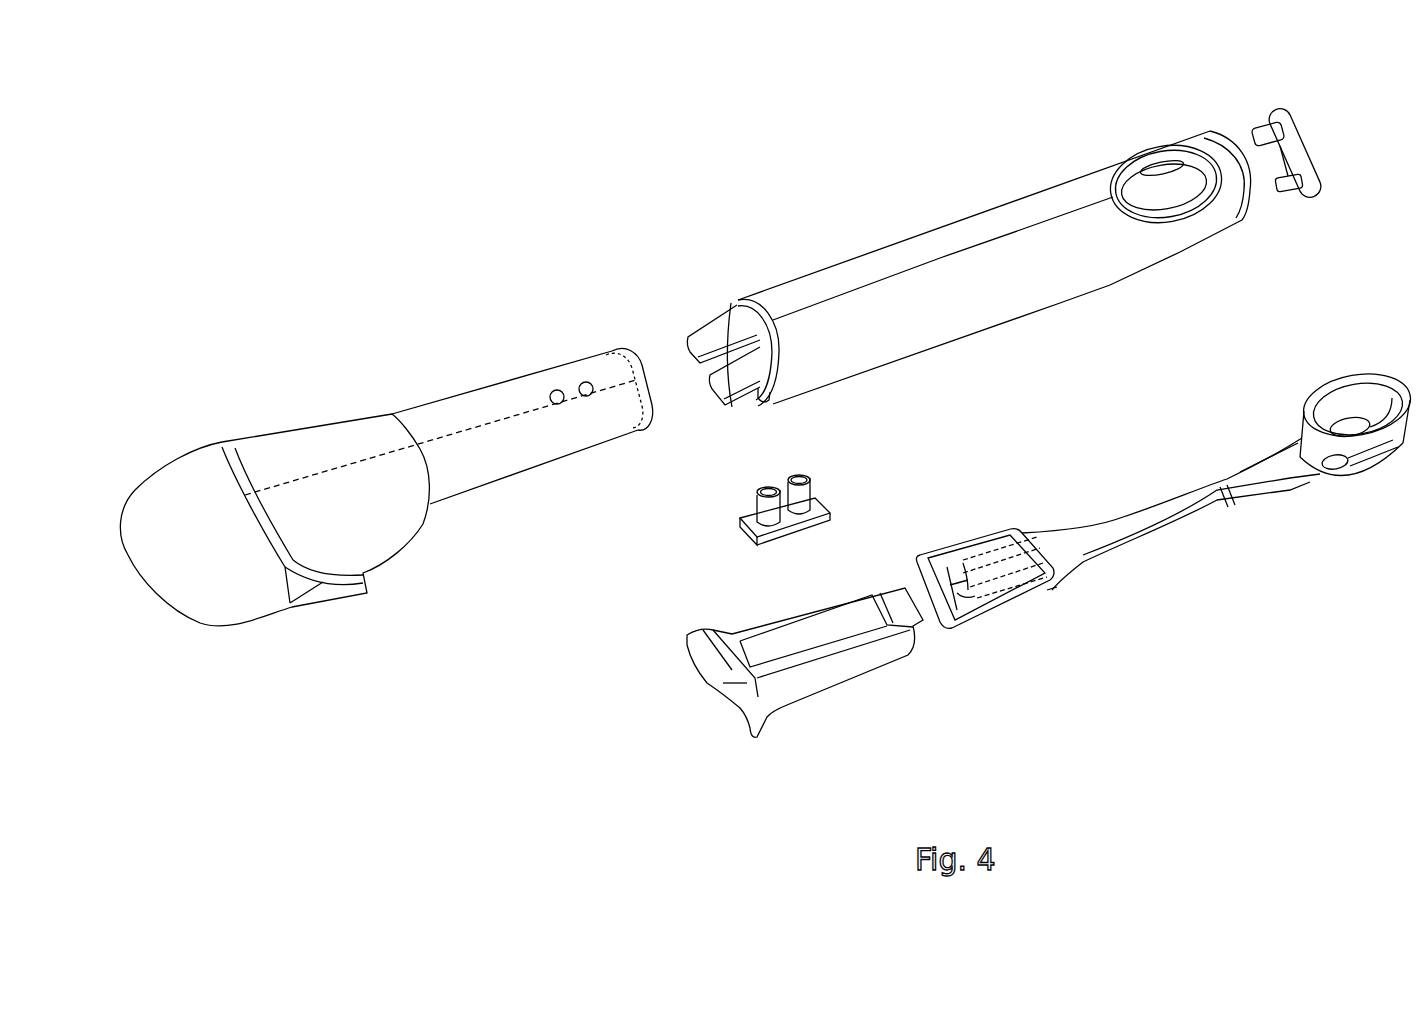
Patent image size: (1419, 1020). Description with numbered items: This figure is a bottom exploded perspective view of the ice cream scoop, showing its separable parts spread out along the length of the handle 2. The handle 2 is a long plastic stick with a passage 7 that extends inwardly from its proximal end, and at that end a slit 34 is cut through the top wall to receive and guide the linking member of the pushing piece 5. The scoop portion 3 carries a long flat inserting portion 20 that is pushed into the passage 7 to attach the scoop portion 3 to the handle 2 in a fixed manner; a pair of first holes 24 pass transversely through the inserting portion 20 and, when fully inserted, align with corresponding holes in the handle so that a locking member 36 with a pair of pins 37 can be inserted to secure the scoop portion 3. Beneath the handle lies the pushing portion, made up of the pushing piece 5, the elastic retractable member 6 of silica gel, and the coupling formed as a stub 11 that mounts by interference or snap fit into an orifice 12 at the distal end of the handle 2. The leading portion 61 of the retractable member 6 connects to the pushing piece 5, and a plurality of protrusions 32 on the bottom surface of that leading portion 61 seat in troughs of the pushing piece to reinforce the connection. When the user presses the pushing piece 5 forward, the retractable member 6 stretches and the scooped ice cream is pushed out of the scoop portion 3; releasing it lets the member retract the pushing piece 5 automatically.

The handle 2 is at (932, 230).
The scoop portion 3 is at (255, 438).
The pushing piece 5 is at (785, 710).
The retractable member 6 is at (1125, 547).
The passage 7 is at (728, 312).
The stub 11 is at (1389, 453).
The orifice 12 is at (1160, 199).
The inserting portion 20 is at (543, 370).
The first holes 24 is at (562, 402).
The protrusions 32 is at (972, 566).
The slit 34 is at (732, 407).
The locking member 36 is at (788, 538).
The pins 37 is at (797, 502).
The leading portion 61 is at (968, 623).